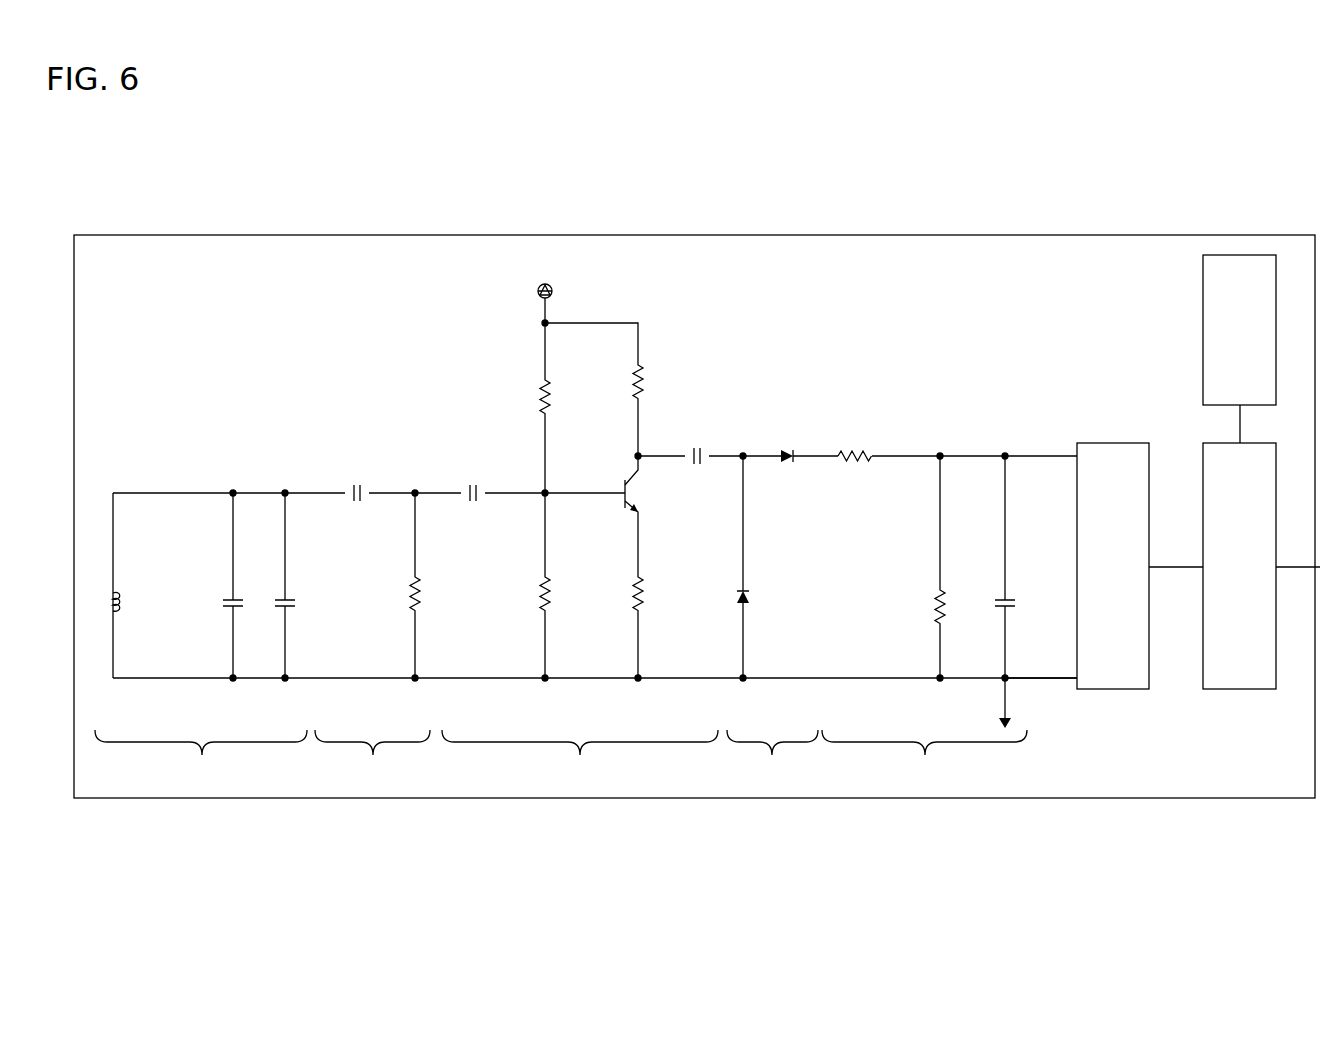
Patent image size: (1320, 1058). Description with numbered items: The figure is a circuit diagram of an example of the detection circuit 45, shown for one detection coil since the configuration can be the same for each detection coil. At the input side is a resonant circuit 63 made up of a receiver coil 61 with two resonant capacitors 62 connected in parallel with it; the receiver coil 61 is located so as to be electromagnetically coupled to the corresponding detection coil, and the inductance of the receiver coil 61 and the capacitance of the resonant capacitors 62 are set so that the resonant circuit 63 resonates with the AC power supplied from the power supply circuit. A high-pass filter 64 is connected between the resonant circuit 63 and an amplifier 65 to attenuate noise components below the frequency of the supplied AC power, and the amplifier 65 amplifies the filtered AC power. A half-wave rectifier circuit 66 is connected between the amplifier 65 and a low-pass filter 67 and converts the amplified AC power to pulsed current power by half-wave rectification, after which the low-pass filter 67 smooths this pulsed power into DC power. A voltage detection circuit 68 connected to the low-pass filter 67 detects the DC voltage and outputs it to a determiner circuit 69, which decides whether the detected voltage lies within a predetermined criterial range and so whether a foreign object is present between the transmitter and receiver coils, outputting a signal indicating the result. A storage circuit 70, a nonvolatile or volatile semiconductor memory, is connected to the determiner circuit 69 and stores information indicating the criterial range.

The detection circuit 45 is at (1222, 853).
The receiver coil 61 is at (118, 604).
The resonant capacitors 62 is at (228, 601).
The resonant circuit 63 is at (201, 761).
The high-pass filter 64 is at (372, 638).
The amplifier 65 is at (580, 538).
The half-wave rectifier circuit 66 is at (772, 621).
The low-pass filter 67 is at (924, 621).
The voltage detection circuit 68 is at (1113, 689).
The determiner circuit 69 is at (1238, 689).
The storage circuit 70 is at (1203, 326).